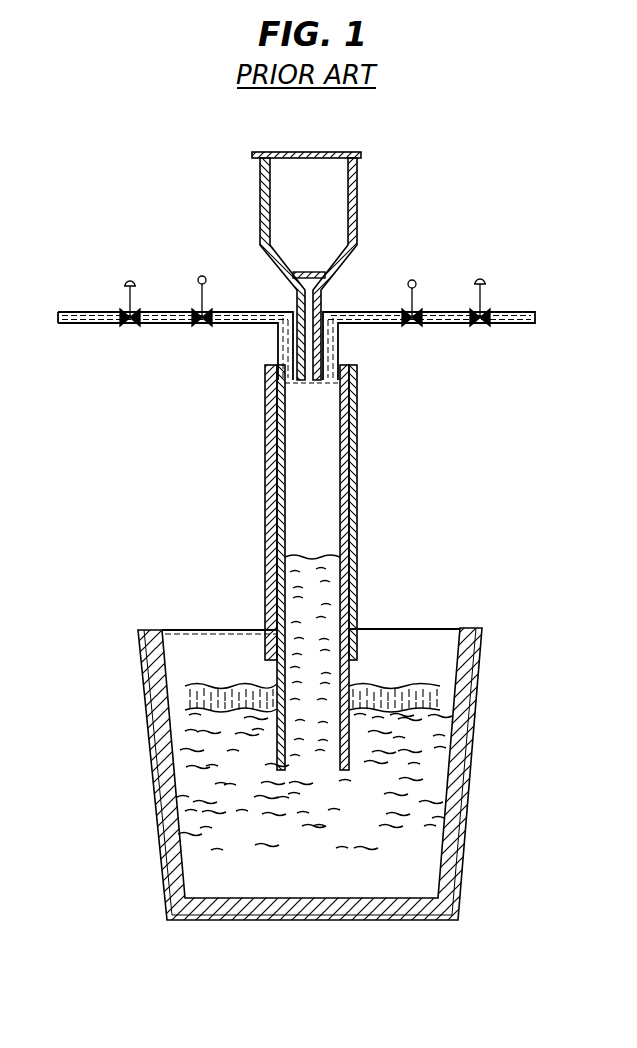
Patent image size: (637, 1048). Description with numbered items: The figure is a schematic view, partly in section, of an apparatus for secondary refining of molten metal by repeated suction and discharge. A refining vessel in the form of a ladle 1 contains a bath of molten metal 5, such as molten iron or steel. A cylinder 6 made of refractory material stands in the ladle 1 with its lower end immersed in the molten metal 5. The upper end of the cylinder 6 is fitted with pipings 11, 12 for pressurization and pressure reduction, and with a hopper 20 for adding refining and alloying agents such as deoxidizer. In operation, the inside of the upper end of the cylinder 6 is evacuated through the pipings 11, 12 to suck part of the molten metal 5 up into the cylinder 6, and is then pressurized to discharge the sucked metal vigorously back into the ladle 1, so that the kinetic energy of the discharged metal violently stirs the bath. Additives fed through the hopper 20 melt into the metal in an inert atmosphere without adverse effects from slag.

The ladle 1 is at (479, 729).
The molten metal 5 is at (410, 792).
The refractory cylinder 6 is at (350, 497).
The piping 11 is at (363, 310).
The piping 12 is at (233, 328).
The hopper 20 is at (357, 217).